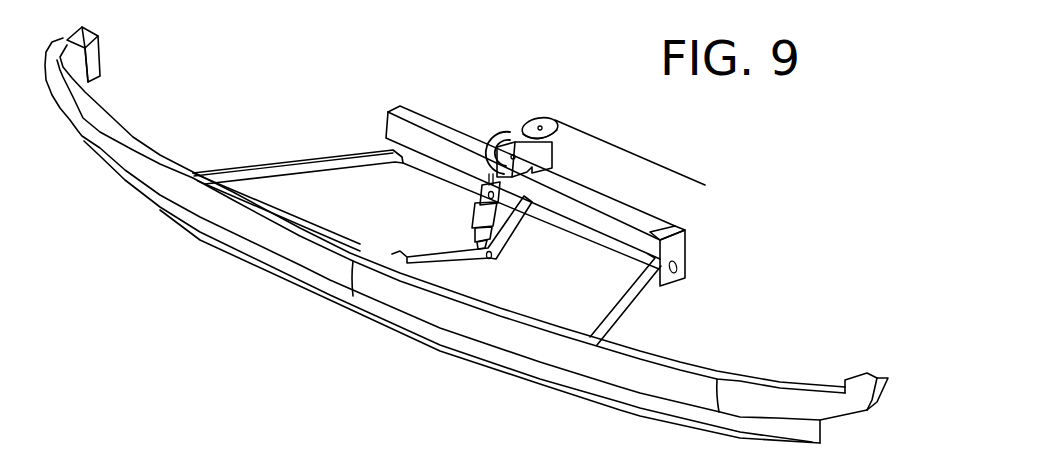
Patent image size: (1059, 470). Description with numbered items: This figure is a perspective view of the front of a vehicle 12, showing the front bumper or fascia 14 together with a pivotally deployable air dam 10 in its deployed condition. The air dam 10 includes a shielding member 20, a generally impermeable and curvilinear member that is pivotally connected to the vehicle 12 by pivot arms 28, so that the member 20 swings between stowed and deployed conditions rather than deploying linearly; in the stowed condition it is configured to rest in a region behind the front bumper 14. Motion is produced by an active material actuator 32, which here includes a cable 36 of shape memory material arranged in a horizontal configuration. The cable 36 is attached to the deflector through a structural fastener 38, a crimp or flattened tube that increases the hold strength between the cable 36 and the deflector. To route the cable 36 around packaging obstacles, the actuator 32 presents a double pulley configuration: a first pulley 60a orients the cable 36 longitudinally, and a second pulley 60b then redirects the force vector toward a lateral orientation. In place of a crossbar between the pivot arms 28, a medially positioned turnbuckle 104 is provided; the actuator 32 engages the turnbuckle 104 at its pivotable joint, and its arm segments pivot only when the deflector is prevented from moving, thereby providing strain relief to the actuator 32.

The air dam 10 is at (803, 284).
The vehicle 12 is at (403, 112).
The front bumper or fascia 14 is at (451, 219).
The shielding member 20 is at (351, 298).
The pivot arms 28 is at (277, 160).
The active material actuator 32 is at (548, 196).
The cable 36 is at (700, 140).
The structural fastener 38 is at (485, 216).
The first pulley 60a is at (500, 133).
The second pulley 60b is at (595, 92).
The turnbuckle 104 is at (500, 268).